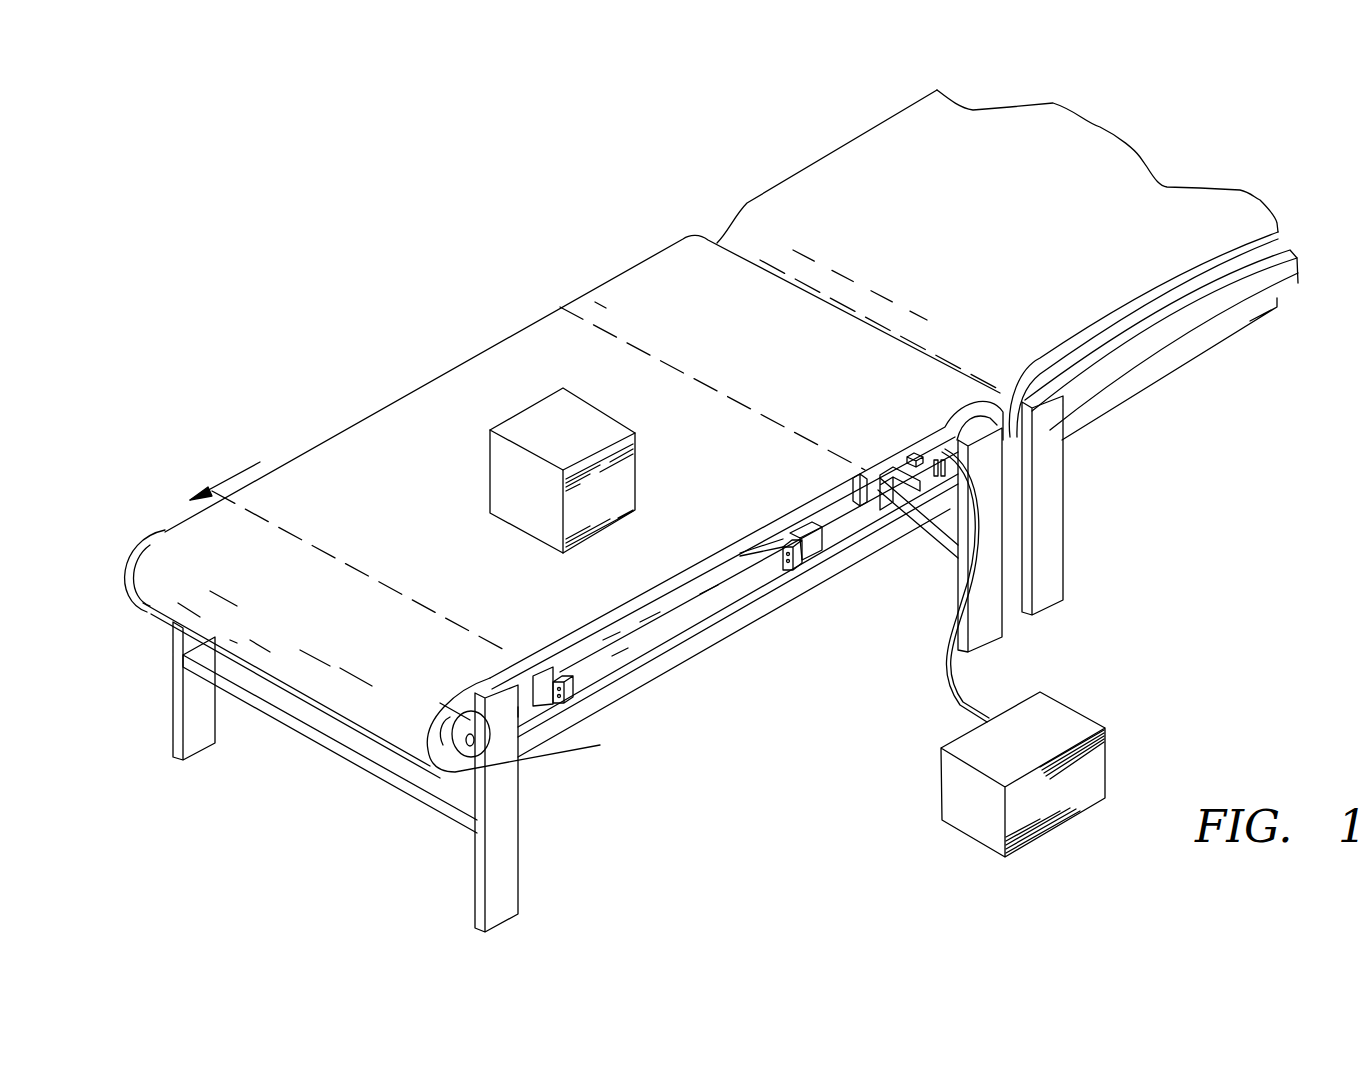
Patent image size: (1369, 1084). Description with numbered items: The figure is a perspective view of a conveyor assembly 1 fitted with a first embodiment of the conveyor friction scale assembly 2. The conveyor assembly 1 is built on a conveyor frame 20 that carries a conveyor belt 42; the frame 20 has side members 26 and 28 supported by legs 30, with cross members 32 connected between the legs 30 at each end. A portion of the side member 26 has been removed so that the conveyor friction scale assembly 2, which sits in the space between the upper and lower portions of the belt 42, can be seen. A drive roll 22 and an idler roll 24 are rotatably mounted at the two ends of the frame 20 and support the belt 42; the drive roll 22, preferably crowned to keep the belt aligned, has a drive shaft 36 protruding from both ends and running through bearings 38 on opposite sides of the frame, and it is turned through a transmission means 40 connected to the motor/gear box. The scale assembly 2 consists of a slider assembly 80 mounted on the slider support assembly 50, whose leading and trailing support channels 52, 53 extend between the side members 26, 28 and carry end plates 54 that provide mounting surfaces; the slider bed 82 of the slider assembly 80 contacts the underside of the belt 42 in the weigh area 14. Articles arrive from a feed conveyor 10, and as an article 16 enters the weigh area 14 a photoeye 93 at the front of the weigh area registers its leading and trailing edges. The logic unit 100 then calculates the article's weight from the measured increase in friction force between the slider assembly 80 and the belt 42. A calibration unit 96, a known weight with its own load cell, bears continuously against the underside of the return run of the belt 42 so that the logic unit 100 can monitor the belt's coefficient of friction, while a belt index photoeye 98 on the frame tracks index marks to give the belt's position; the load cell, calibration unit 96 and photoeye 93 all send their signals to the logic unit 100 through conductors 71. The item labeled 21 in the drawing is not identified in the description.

The conveyor assembly 1 is at (240, 843).
The conveyor friction scale assembly 2 is at (620, 797).
The feed conveyor 10 is at (778, 172).
The weigh area 14 is at (347, 485).
The article 16 is at (527, 430).
The conveyor frame 20 is at (564, 506).
The frame 21 is at (692, 677).
The drive roll 22 is at (418, 780).
The idler roll 24 is at (1030, 420).
The side member 26 is at (916, 492).
The side member 28 is at (555, 300).
The legs 30 is at (198, 735).
The cross members 32 is at (324, 750).
The drive shaft 36 is at (478, 748).
The bearings 38 is at (470, 748).
The transmission means 40 is at (143, 548).
The conveyor belt 42 is at (640, 305).
The slider support assembly 50 is at (758, 572).
The leading support channel 52 is at (803, 560).
The trailing support channel 53 is at (575, 684).
The end plates 54 is at (562, 703).
The conductors 71 is at (977, 690).
The slider assembly 80 is at (855, 522).
The slider bed 82 is at (665, 597).
The photoeye 93 is at (912, 453).
The calibration unit 96 is at (570, 688).
The belt index photoeye 98 is at (856, 512).
The logic unit 100 is at (1085, 778).